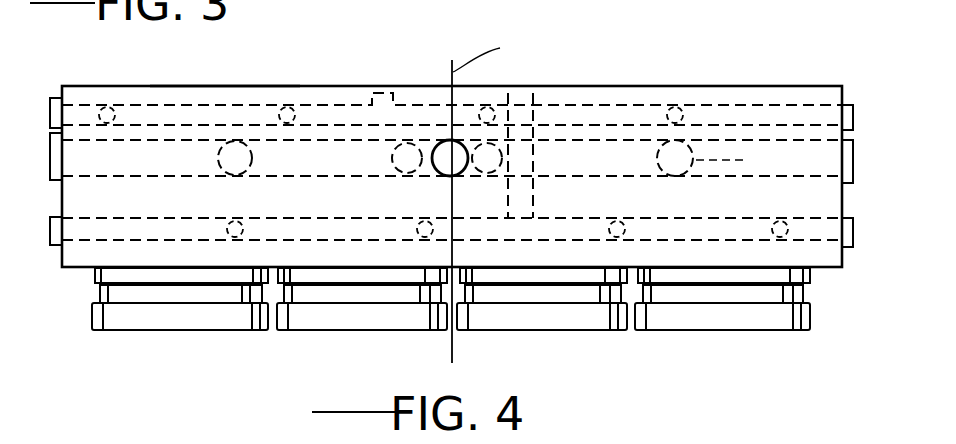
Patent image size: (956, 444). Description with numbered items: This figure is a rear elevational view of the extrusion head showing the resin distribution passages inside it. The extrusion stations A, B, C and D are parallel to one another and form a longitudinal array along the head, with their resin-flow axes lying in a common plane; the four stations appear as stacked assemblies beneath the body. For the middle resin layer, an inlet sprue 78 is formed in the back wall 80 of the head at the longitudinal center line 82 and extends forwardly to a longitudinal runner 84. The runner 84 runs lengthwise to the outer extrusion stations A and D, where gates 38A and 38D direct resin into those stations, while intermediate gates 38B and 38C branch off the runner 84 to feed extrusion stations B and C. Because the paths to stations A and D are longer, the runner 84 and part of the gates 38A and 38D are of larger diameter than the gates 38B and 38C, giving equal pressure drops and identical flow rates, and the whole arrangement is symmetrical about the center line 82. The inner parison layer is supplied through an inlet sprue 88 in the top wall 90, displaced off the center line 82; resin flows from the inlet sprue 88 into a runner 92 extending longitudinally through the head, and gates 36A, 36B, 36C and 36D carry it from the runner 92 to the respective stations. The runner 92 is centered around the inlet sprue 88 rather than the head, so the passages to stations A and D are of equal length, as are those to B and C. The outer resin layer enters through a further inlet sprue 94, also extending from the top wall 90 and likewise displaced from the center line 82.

The back wall 80 is at (770, 95).
The top wall 90 is at (211, 85).
The inlet sprue 88 is at (405, 95).
The longitudinal center line 82 is at (545, 65).
The inlet sprue 94 is at (560, 70).
The longitudinal runner 84 is at (607, 178).
The runner 92 is at (636, 112).
The gate 36A is at (118, 112).
The gate 36B is at (300, 112).
The gate 36C is at (536, 100).
The gate 36D is at (690, 106).
The gate 38A is at (216, 160).
The intermediate gate 38B is at (390, 160).
The intermediate gate 38C is at (534, 162).
The gate 38D is at (744, 158).
The inlet sprue 78 is at (434, 177).
The extrusion station A is at (137, 331).
The extrusion station B is at (340, 331).
The extrusion station C is at (550, 331).
The extrusion station D is at (747, 333).